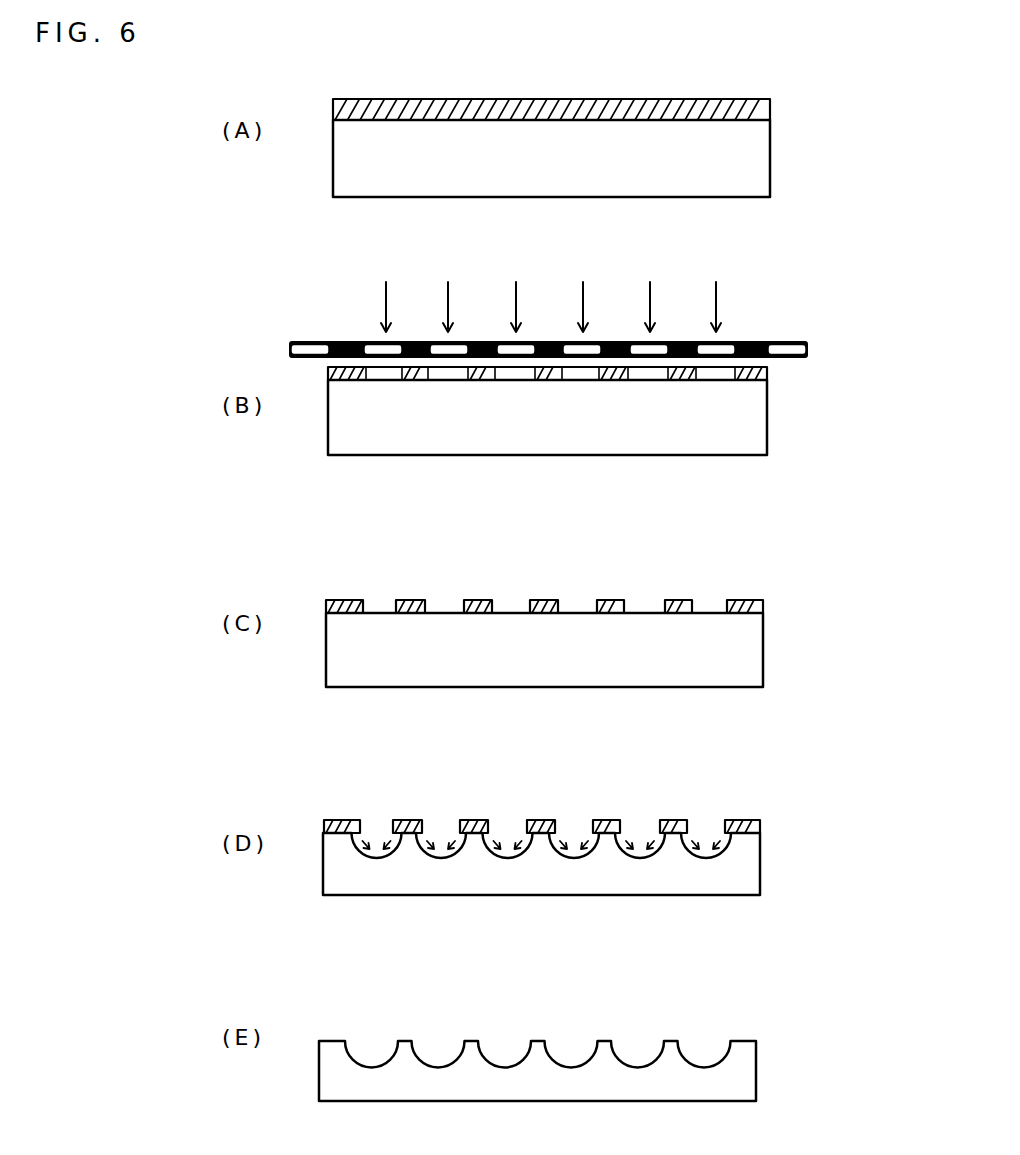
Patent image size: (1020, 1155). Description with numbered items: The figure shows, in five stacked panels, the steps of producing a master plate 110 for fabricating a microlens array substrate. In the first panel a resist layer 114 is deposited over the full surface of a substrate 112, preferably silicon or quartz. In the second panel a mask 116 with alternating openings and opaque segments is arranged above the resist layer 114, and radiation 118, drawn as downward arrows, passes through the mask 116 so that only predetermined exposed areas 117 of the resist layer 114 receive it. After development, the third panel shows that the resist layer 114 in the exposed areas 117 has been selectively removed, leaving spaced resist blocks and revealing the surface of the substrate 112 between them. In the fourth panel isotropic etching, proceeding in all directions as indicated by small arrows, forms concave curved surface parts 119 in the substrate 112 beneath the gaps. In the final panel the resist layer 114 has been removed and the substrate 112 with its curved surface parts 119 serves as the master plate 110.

The master plate 110 is at (808, 1029).
The substrate 112 is at (762, 158).
The resist layer 114 is at (771, 115).
The mask 116 is at (807, 349).
The exposed areas 117 is at (720, 385).
The radiation 118 is at (716, 296).
The curved surface parts 119 is at (707, 855).